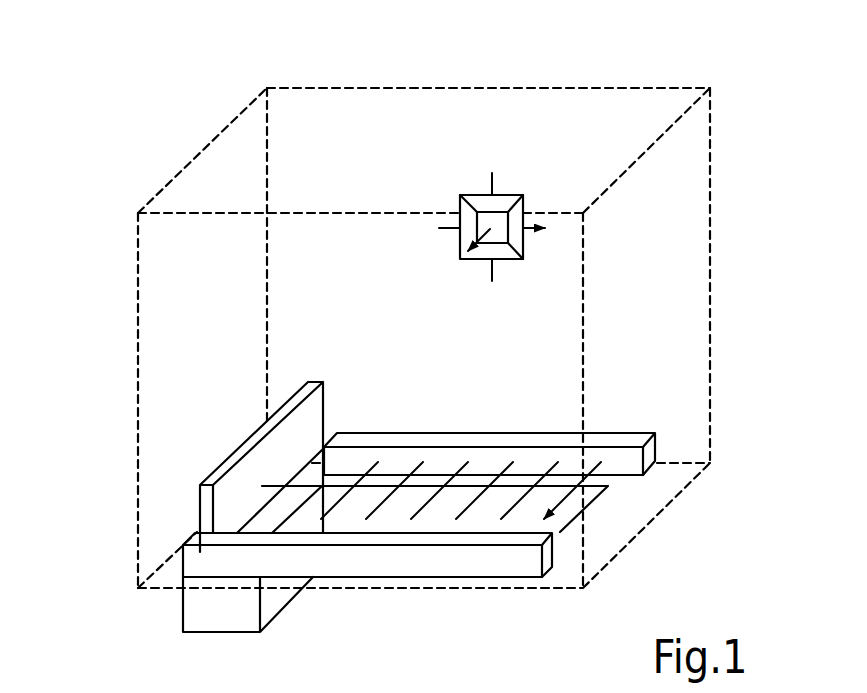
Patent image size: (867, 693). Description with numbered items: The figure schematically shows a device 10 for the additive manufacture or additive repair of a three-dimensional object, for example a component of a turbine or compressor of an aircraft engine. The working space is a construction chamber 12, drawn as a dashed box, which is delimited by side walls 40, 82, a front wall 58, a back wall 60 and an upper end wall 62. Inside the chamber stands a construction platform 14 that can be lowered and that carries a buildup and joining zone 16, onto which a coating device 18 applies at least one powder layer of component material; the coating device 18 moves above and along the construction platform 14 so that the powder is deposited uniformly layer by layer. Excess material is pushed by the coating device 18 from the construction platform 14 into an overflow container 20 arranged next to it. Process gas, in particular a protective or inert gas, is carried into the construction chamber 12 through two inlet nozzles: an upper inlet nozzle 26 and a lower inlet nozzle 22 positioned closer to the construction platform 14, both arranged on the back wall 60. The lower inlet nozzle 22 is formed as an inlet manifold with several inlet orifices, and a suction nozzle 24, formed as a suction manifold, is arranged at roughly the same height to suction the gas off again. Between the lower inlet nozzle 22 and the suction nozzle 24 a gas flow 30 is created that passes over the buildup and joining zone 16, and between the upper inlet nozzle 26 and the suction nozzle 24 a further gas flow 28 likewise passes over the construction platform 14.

The device 10 is at (196, 87).
The construction chamber 12 is at (590, 88).
The construction platform 14 is at (585, 510).
The buildup and joining zone 16 is at (560, 532).
The coating device 18 is at (207, 463).
The overflow container 20 is at (190, 615).
The lower inlet nozzle 22 is at (623, 437).
The suction nozzle 24 is at (520, 568).
The upper inlet nozzle 26 is at (523, 242).
The gas flow 28 is at (490, 257).
The gas flow 30 is at (366, 472).
The side wall 40 is at (692, 212).
The front wall 58 is at (152, 273).
The back wall 60 is at (714, 166).
The upper end wall 62 is at (418, 102).
The side wall 82 is at (136, 312).